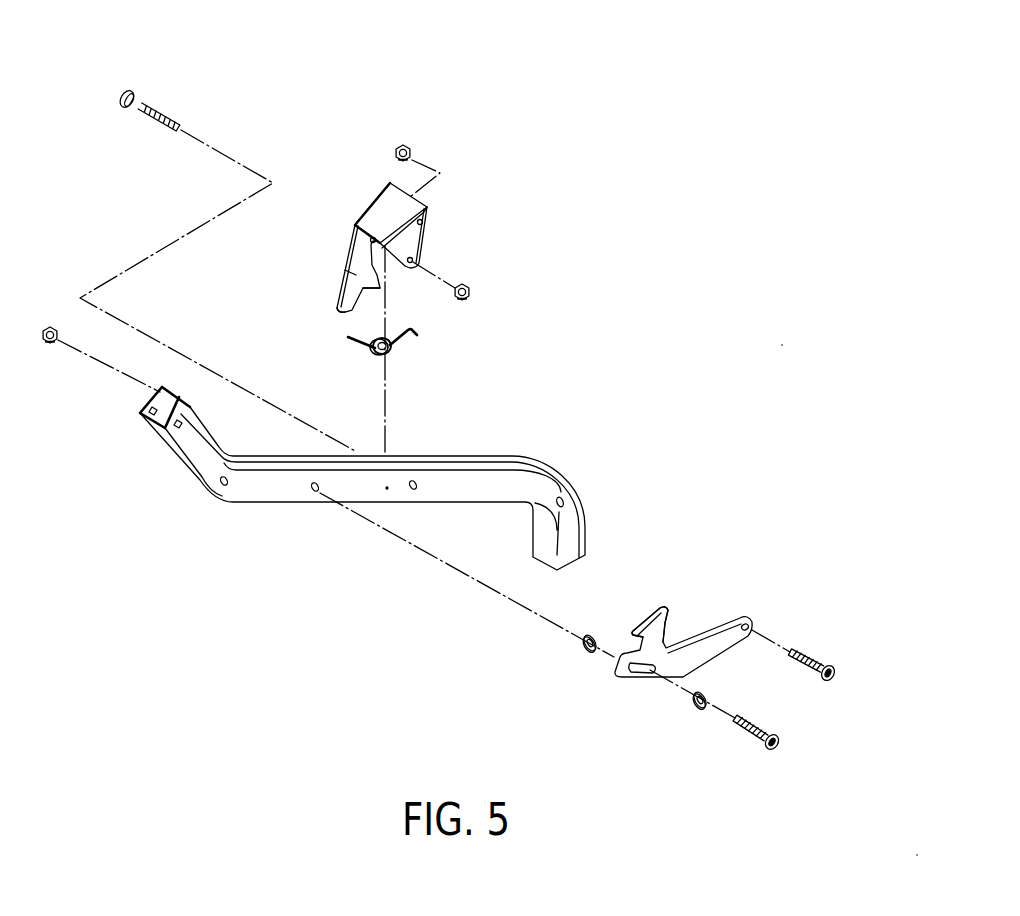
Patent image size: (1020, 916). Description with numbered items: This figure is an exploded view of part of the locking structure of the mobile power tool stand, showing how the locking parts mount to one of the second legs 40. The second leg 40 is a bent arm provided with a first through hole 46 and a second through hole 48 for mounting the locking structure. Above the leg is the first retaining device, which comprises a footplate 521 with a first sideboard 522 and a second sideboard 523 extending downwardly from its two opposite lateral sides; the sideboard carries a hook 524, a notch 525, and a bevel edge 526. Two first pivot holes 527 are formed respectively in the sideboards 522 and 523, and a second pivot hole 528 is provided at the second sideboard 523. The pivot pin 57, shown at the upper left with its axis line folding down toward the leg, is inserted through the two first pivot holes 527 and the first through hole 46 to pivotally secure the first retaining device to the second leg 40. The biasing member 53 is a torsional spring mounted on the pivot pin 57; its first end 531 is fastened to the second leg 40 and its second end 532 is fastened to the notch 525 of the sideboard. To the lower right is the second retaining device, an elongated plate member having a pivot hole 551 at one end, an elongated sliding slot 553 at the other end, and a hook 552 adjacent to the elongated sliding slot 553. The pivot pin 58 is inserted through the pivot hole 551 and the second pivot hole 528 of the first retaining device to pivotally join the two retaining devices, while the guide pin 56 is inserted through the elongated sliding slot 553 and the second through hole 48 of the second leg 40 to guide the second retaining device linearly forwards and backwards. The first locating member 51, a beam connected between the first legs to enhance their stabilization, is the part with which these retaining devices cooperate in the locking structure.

The second leg 40 is at (515, 454).
The first through hole 46 is at (415, 490).
The second through hole 48 is at (313, 491).
The first locating member 51 is at (715, 637).
The biasing member 53 is at (387, 384).
The guide pin 56 is at (763, 755).
The pivot pin 57 is at (158, 110).
The pivot pin 58 is at (830, 664).
The footplate 521 is at (382, 205).
The first sideboard 522 is at (340, 290).
The second sideboard 523 is at (422, 240).
The hook 524 is at (381, 288).
The notch 525 is at (350, 270).
The bevel edge 526 is at (352, 311).
The first pivot holes 527 is at (414, 260).
The second pivot hole 528 is at (433, 217).
The first end 531 is at (412, 333).
The second end 532 is at (349, 338).
The pivot hole 551 is at (752, 627).
The hook 552 is at (633, 631).
The elongated sliding slot 553 is at (638, 672).